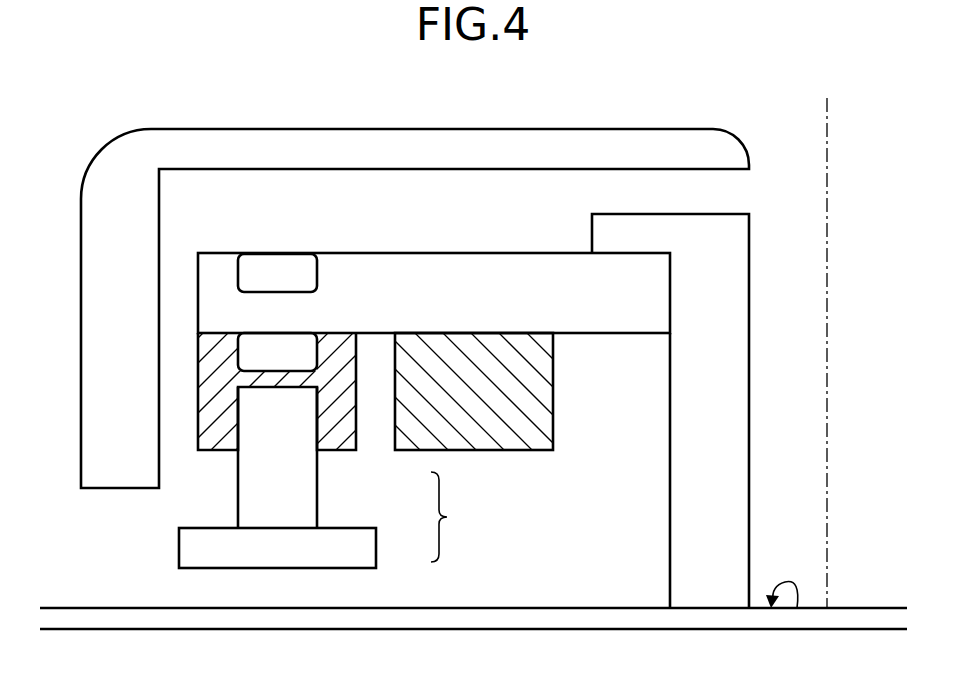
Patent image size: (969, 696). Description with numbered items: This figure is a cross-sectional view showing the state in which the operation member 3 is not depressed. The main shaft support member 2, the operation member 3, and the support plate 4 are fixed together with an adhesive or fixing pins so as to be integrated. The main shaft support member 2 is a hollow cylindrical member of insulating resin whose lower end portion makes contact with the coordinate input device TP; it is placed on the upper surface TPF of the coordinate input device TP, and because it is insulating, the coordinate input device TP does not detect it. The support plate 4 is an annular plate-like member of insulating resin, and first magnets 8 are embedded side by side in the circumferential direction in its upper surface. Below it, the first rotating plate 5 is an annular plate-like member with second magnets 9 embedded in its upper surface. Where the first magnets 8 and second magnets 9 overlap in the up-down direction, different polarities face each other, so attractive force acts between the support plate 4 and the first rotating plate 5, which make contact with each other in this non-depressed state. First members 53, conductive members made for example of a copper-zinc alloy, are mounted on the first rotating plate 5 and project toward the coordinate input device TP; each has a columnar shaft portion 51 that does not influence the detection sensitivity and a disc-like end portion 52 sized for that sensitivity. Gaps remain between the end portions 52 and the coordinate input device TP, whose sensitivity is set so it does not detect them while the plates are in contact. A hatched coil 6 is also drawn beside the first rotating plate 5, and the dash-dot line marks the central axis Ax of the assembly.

The main shaft support member 2 is at (730, 233).
The operation member 3 is at (744, 148).
The support plate 4 is at (570, 270).
The first rotating plate 5 is at (220, 440).
The coil 6 is at (538, 428).
The first magnets 8 is at (303, 270).
The second magnets 9 is at (304, 342).
The shaft portion 51 is at (300, 483).
The end portion 52 is at (363, 547).
The first members 53 is at (451, 517).
The coordinate input device TP is at (652, 618).
The upper surface TPF is at (797, 608).
The axis Ax is at (828, 341).